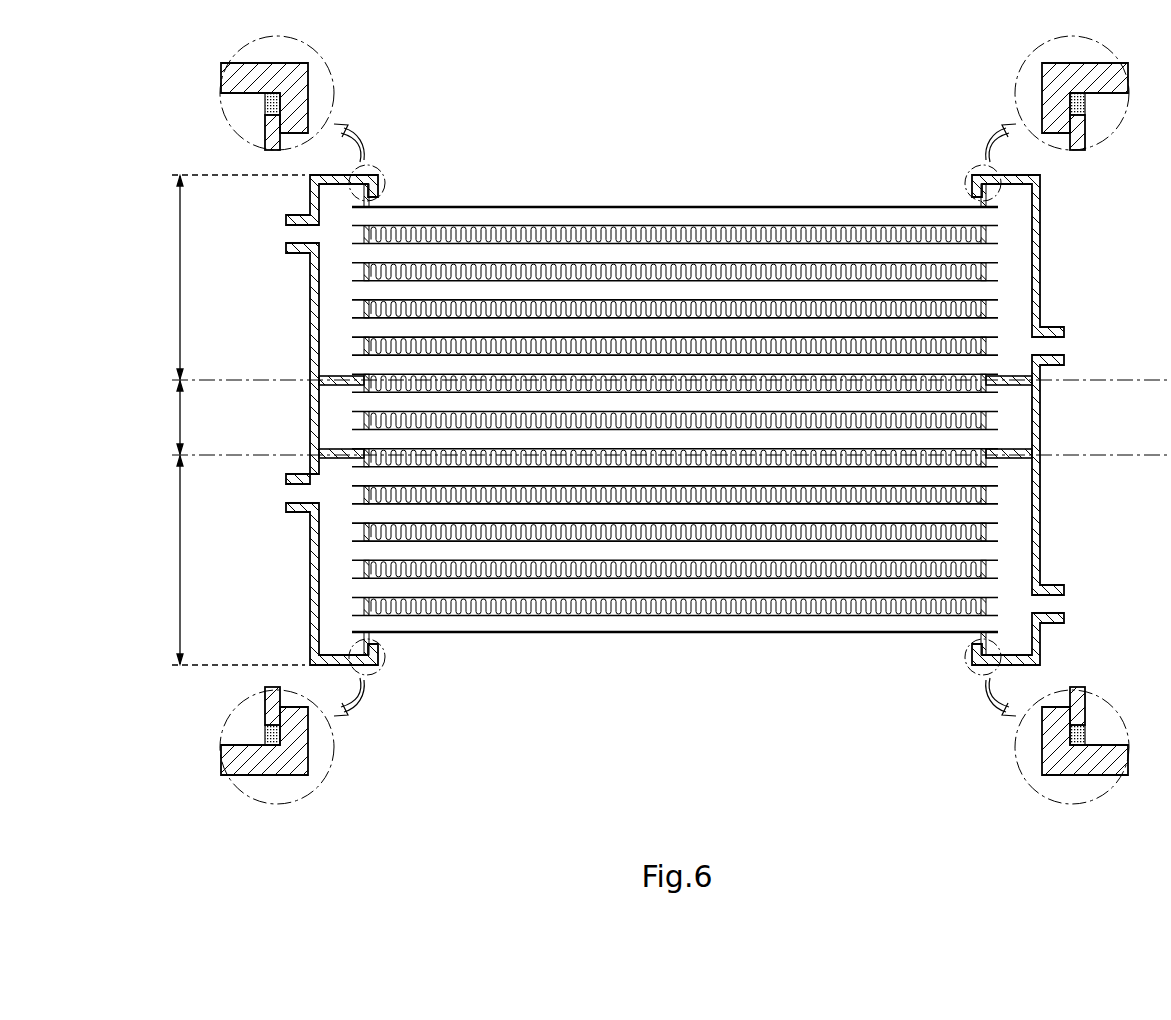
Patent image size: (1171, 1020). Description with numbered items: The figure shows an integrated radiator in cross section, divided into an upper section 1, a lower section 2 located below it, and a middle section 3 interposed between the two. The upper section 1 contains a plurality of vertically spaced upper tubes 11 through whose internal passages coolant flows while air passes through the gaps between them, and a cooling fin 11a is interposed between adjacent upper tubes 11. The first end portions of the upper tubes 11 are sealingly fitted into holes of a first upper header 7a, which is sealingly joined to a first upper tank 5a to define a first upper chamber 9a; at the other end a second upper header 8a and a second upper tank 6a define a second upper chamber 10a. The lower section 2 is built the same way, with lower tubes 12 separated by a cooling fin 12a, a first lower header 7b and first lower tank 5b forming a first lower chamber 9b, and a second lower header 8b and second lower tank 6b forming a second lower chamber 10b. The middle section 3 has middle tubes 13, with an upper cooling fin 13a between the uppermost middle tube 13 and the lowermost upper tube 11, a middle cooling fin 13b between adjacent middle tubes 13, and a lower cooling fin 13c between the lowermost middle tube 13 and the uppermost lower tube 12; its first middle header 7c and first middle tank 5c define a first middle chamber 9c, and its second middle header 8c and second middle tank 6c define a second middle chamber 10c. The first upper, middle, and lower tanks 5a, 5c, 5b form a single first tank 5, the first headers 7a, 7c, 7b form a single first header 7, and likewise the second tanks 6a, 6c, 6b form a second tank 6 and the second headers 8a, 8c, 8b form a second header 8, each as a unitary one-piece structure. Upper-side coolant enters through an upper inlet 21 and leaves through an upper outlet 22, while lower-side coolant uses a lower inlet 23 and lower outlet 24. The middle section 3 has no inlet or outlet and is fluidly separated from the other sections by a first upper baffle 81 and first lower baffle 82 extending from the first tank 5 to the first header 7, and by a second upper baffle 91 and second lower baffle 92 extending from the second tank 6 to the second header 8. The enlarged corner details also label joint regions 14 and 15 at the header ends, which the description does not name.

The upper section 1 is at (168, 277).
The lower section 2 is at (168, 560).
The middle section 3 is at (168, 418).
The first tank 5 is at (302, 420).
The first upper tank 5a is at (306, 329).
The first lower tank 5b is at (305, 579).
The first middle tank 5c is at (318, 447).
The second tank 6 is at (1054, 420).
The second upper tank 6a is at (1039, 301).
The second lower tank 6b is at (1039, 523).
The second middle tank 6c is at (1039, 445).
The first header 7 is at (591, 420).
The first upper header 7a is at (363, 270).
The first lower header 7b is at (363, 568).
The first middle header 7c is at (363, 420).
The second header 8 is at (1042, 420).
The second upper header 8a is at (987, 270).
The second lower header 8b is at (987, 568).
The second middle header 8c is at (987, 420).
The first upper chamber 9a is at (329, 333).
The first lower chamber 9b is at (329, 556).
The first middle chamber 9c is at (329, 415).
The second upper chamber 10a is at (1004, 333).
The second lower chamber 10b is at (1004, 556).
The second middle chamber 10c is at (1004, 415).
The upper tube 11 is at (676, 215).
The cooling fin 11a is at (655, 235).
The lower tube 12 is at (768, 625).
The cooling fin 12a is at (762, 612).
The middle tube 13 is at (812, 437).
The upper cooling fin 13a is at (745, 380).
The middle cooling fin 13b is at (790, 418).
The lower cooling fin 13c is at (836, 455).
The brazing joint 14 is at (270, 104).
The brazing joint 15 is at (1078, 104).
The upper inlet 21 is at (304, 249).
The upper outlet 22 is at (1062, 331).
The lower inlet 23 is at (300, 508).
The lower outlet 24 is at (1062, 612).
The first upper baffle 81 is at (321, 381).
The first lower baffle 82 is at (325, 455).
The second upper baffle 91 is at (1040, 380).
The second lower baffle 92 is at (1040, 458).